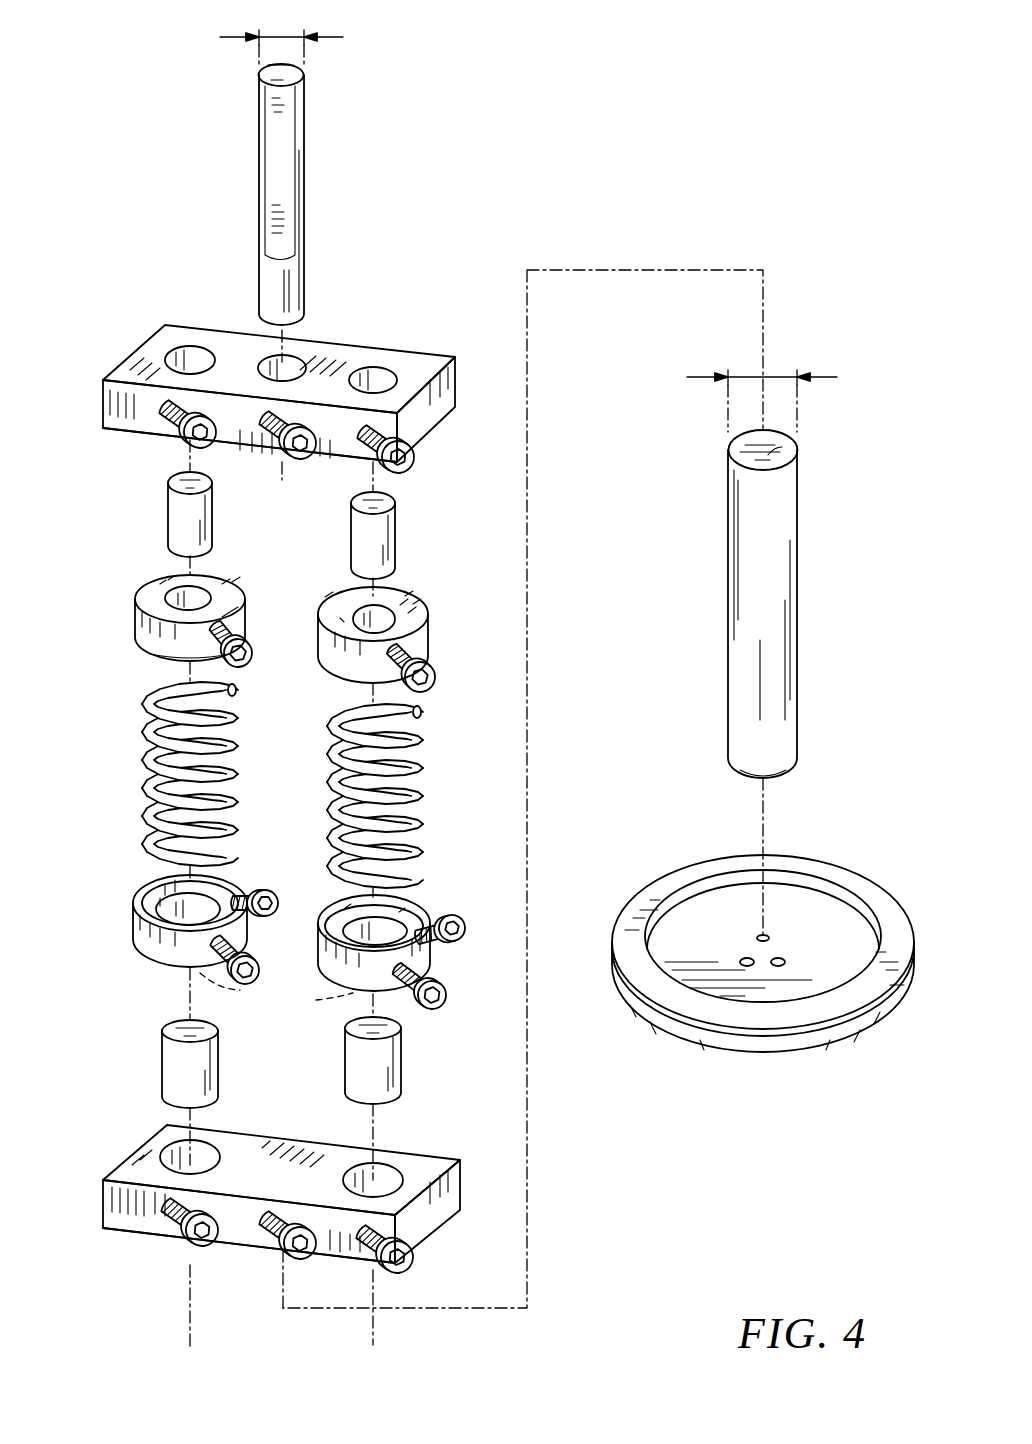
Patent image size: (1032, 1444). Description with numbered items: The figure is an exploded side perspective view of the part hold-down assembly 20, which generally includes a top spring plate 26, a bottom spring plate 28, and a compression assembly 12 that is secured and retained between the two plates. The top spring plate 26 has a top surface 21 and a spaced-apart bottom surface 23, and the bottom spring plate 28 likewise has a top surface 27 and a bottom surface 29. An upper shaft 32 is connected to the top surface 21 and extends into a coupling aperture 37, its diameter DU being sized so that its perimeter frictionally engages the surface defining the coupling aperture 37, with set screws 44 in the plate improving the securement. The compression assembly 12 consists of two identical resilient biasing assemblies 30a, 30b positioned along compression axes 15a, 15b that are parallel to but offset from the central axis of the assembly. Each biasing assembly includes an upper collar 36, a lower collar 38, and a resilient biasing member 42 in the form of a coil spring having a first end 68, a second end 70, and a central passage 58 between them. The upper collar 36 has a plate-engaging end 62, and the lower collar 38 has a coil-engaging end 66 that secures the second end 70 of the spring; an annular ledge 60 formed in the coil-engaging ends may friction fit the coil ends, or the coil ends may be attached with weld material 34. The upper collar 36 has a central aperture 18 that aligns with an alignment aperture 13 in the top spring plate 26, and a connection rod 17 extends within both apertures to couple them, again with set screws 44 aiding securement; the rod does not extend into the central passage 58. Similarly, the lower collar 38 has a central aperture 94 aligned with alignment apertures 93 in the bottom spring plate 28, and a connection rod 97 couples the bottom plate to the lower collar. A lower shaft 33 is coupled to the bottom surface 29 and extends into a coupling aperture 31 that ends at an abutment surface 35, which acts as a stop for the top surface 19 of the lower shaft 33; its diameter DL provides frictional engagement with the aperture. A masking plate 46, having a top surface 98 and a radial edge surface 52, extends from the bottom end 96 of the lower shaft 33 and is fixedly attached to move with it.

The part hold-down assembly 20 is at (146, 114).
The upper shaft 32 is at (305, 176).
The coupling aperture 37 is at (280, 352).
The top surface 21 is at (228, 318).
The alignment aperture 13 is at (188, 352).
The top spring plate 26 is at (425, 360).
The bottom surface 23 is at (117, 426).
The set screws 44 is at (305, 422).
The connection rod 17 is at (200, 517).
The central aperture 18 is at (178, 582).
The compression assembly 12 is at (104, 620).
The upper collar 36 is at (140, 598).
The plate-engaging end 62 is at (330, 610).
The central passage 58 is at (350, 624).
The first end 68 is at (222, 657).
The second end 70 is at (88, 862).
The resilient biasing member 42 is at (142, 763).
The resilient biasing assembly 30a is at (128, 957).
The resilient biasing assembly 30b is at (446, 639).
The central aperture 94 is at (396, 918).
The annular ledge 60 is at (135, 908).
The lower collar 38 is at (162, 972).
The weld material 34 is at (440, 950).
The coil-engaging end 66 is at (274, 918).
The connection rod 97 is at (168, 1062).
The coupling aperture 31 is at (249, 1255).
The alignment apertures 93 is at (172, 1146).
The abutment surface 35 is at (255, 1160).
The top surface 27 is at (125, 1160).
The bottom spring plate 28 is at (230, 1238).
The bottom surface 29 is at (120, 1238).
The compression axis 15a is at (186, 1308).
The compression axis 15b is at (375, 1343).
The diameter of the upper shaft DU is at (273, 37).
The diameter of the lower shaft DL is at (776, 377).
The lower shaft 33 is at (784, 528).
The top surface 19 is at (784, 438).
The bottom end 96 is at (780, 778).
The masking plate 46 is at (840, 882).
The radial edge surface 52 is at (858, 1030).
The top surface 98 is at (757, 928).